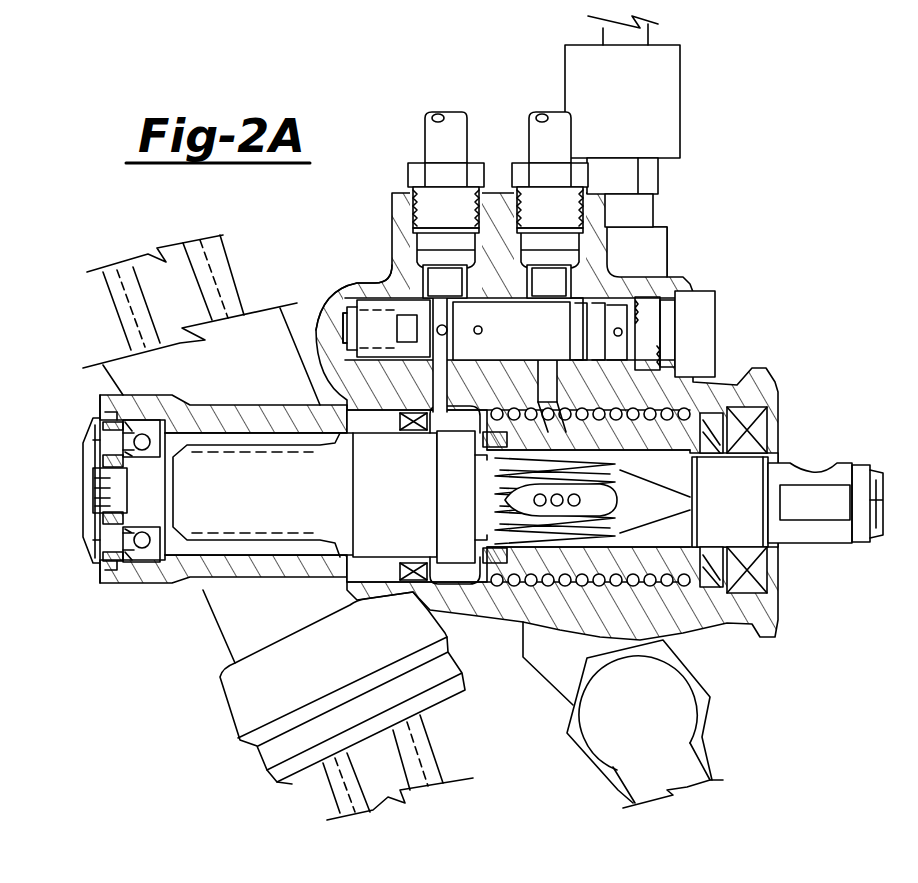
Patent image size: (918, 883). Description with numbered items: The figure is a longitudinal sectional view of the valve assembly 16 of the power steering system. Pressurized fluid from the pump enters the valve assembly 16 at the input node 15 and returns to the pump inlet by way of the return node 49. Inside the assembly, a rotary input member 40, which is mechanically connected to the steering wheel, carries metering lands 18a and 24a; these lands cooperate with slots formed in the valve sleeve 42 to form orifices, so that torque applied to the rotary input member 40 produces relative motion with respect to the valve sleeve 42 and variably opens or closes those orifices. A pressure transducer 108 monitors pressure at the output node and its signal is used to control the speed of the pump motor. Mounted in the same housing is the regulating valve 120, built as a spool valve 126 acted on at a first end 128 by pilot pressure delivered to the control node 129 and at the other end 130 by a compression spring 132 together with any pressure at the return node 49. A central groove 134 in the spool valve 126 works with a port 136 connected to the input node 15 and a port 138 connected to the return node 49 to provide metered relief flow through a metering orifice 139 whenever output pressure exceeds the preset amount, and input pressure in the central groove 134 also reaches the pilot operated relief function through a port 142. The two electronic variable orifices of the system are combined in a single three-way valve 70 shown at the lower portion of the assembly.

The valve assembly 16 is at (768, 249).
The input node 15 is at (541, 118).
The return node 49 is at (438, 117).
The pressure transducer 108 is at (680, 125).
The port 142 is at (437, 298).
The metering orifice 139 is at (497, 298).
The port 138 is at (390, 277).
The port 136 is at (560, 290).
The control node 129 is at (603, 297).
The compression spring 132 is at (362, 298).
The regulating valve 120 is at (346, 273).
The central groove 134 is at (518, 235).
The first end 128 is at (600, 320).
The spool valve 126 is at (620, 378).
The other end 130 is at (395, 340).
The metering land 24a is at (605, 472).
The metering land 18a is at (622, 533).
The rotary input member 40 is at (812, 545).
The valve sleeve 42 is at (703, 627).
The three-way valve 70 is at (707, 722).